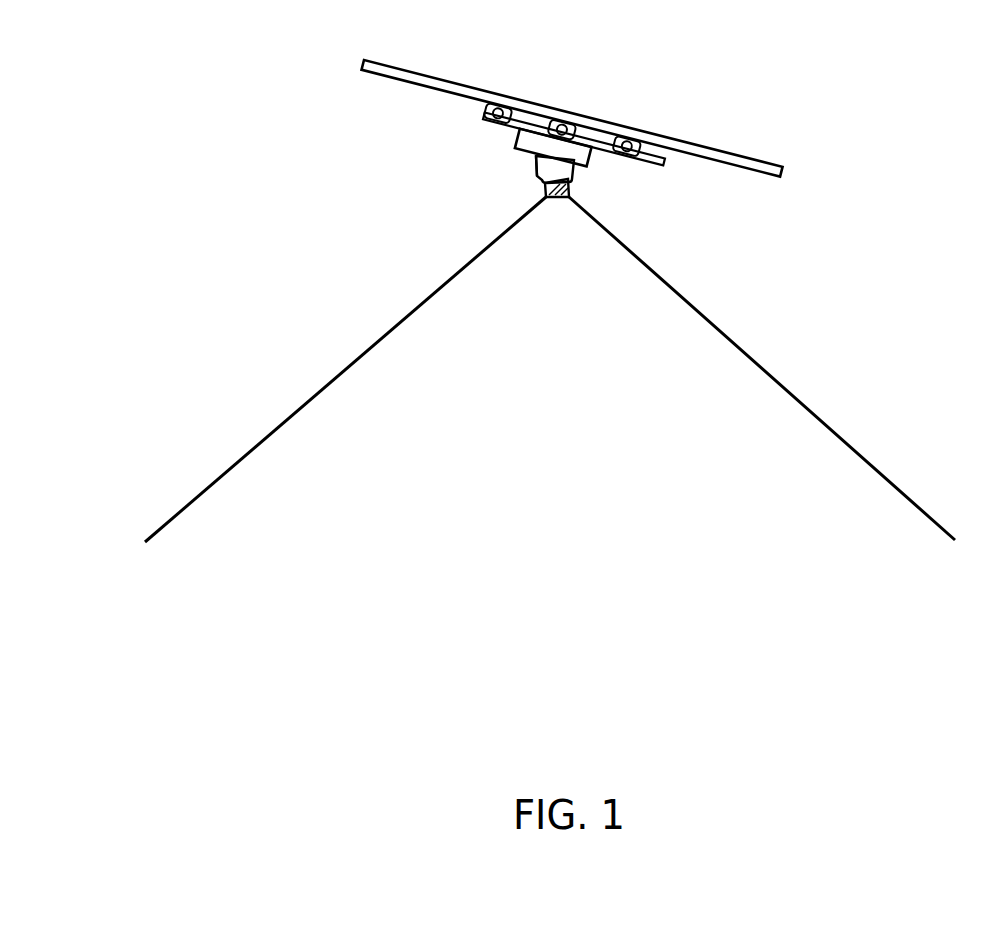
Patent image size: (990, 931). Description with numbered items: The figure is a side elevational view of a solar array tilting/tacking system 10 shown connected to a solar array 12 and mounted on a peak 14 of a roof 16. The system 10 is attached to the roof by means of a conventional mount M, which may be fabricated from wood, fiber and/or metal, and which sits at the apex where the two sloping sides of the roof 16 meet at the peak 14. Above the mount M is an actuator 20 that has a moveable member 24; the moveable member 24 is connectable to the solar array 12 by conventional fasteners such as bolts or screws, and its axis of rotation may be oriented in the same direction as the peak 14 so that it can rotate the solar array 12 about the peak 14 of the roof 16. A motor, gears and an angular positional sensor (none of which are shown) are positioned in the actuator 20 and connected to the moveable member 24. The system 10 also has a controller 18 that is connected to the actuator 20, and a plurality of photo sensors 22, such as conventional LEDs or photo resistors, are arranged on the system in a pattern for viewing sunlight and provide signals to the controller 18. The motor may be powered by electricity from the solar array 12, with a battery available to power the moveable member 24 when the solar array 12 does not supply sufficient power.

The solar array tilting/tacking system 10 is at (500, 157).
The solar array 12 is at (712, 148).
The peak 14 is at (545, 190).
The roof 16 is at (780, 382).
The controller 18 is at (521, 138).
The actuator 20 is at (574, 169).
The photo sensors 22 is at (514, 104).
The moveable member 24 is at (535, 166).
The mount M is at (572, 192).